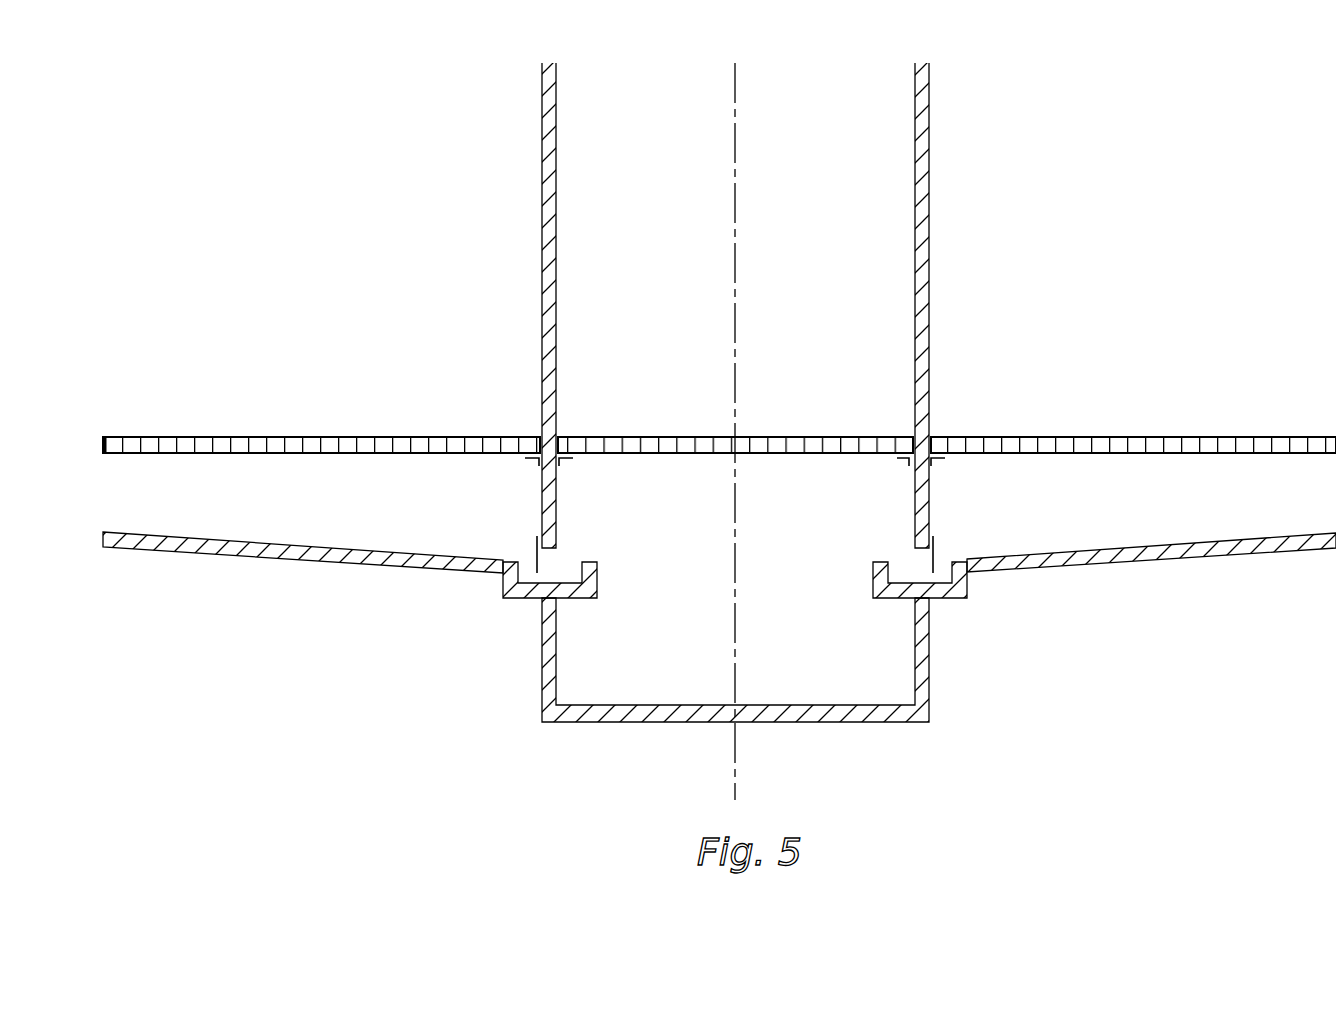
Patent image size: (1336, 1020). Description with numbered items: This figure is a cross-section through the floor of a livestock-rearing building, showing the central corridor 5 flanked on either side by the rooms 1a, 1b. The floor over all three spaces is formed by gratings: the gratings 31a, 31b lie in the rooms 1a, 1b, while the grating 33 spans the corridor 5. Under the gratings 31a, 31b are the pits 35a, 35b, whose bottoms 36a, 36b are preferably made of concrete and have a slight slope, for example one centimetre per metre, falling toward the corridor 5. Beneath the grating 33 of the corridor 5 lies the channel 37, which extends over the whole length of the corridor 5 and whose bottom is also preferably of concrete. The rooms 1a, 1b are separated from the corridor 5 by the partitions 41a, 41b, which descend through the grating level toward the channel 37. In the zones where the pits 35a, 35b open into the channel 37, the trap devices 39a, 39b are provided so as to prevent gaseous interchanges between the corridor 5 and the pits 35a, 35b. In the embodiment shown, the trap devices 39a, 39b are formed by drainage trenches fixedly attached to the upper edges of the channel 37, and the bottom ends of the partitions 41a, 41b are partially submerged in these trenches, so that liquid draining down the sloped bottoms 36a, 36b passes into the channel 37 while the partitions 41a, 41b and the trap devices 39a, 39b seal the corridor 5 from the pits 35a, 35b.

The room 1a is at (324, 218).
The room 1b is at (1148, 218).
The corridor 5 is at (794, 261).
The grating 31a is at (318, 437).
The grating 31b is at (1150, 437).
The grating 33 is at (815, 437).
The pit 35a is at (194, 493).
The pit 35b is at (1282, 493).
The bottom 36a is at (318, 532).
The bottom 36b is at (1155, 546).
The channel 37 is at (735, 660).
The trap device 39a is at (565, 562).
The trap device 39b is at (903, 562).
The partition 41a is at (556, 175).
The partition 41b is at (915, 175).